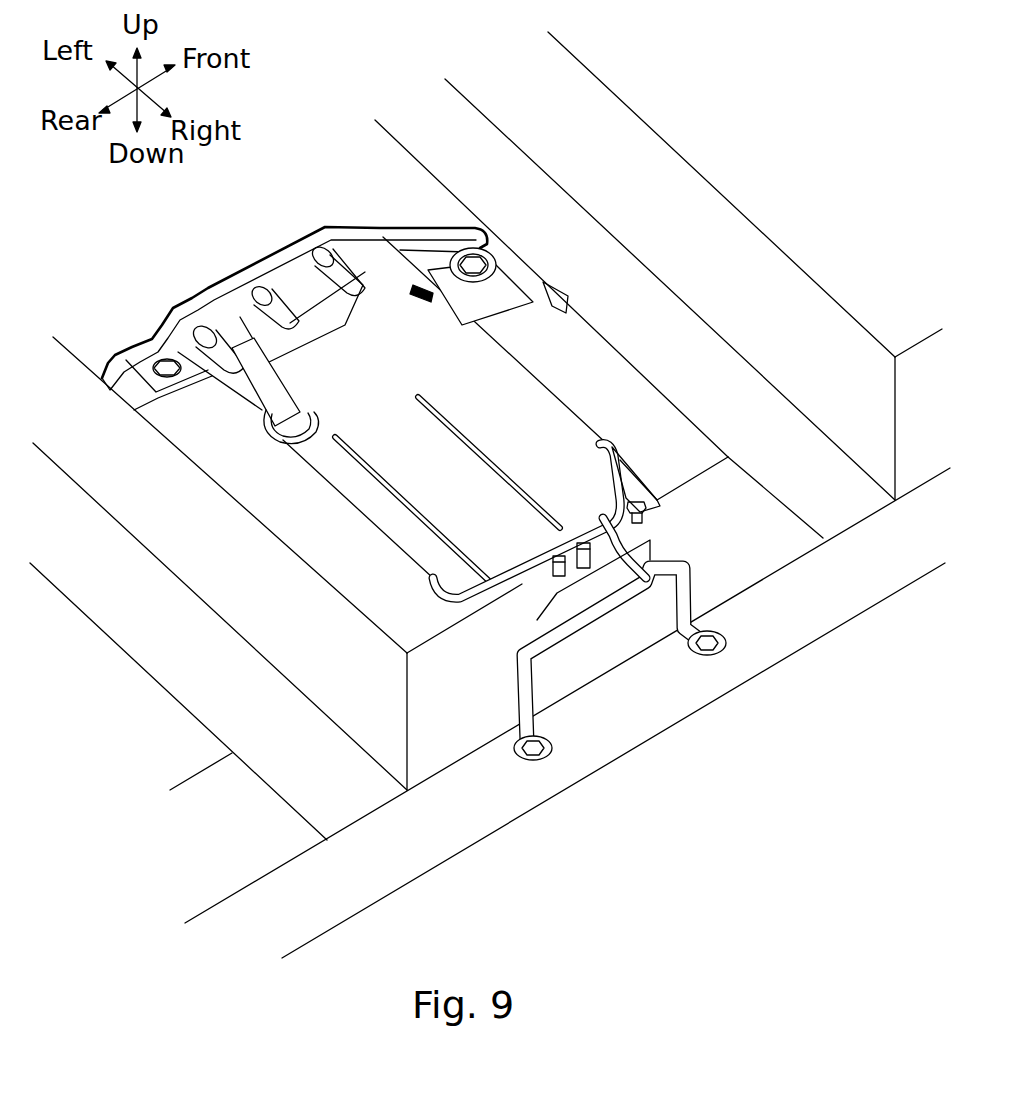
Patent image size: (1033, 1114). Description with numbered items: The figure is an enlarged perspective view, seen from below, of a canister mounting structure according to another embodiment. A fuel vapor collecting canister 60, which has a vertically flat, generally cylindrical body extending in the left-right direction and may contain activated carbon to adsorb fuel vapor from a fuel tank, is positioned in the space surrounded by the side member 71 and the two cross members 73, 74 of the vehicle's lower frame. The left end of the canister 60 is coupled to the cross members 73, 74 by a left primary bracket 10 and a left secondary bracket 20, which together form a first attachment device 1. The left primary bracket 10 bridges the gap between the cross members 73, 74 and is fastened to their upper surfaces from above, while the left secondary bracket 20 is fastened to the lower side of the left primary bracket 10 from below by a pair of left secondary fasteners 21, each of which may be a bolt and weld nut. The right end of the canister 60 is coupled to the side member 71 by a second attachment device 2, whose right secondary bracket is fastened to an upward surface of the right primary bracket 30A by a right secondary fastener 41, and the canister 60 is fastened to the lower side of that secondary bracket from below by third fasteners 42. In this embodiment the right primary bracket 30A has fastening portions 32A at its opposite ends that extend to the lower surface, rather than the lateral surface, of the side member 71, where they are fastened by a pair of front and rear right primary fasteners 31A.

The first attachment device 1 is at (299, 218).
The second attachment device 2 is at (498, 653).
The left primary bracket 10 is at (205, 288).
The left secondary bracket 20 is at (252, 276).
The left secondary fastener 21 is at (168, 374).
The right primary bracket 30A is at (620, 541).
The right primary fastener 31A is at (535, 760).
The fastening portion 32A is at (557, 740).
The right secondary fastener 41 is at (590, 560).
The third fastener 42 is at (660, 510).
The fuel vapor collecting canister 60 is at (510, 393).
The side member 71 is at (667, 710).
The cross member 73 is at (705, 200).
The cross member 74 is at (120, 635).